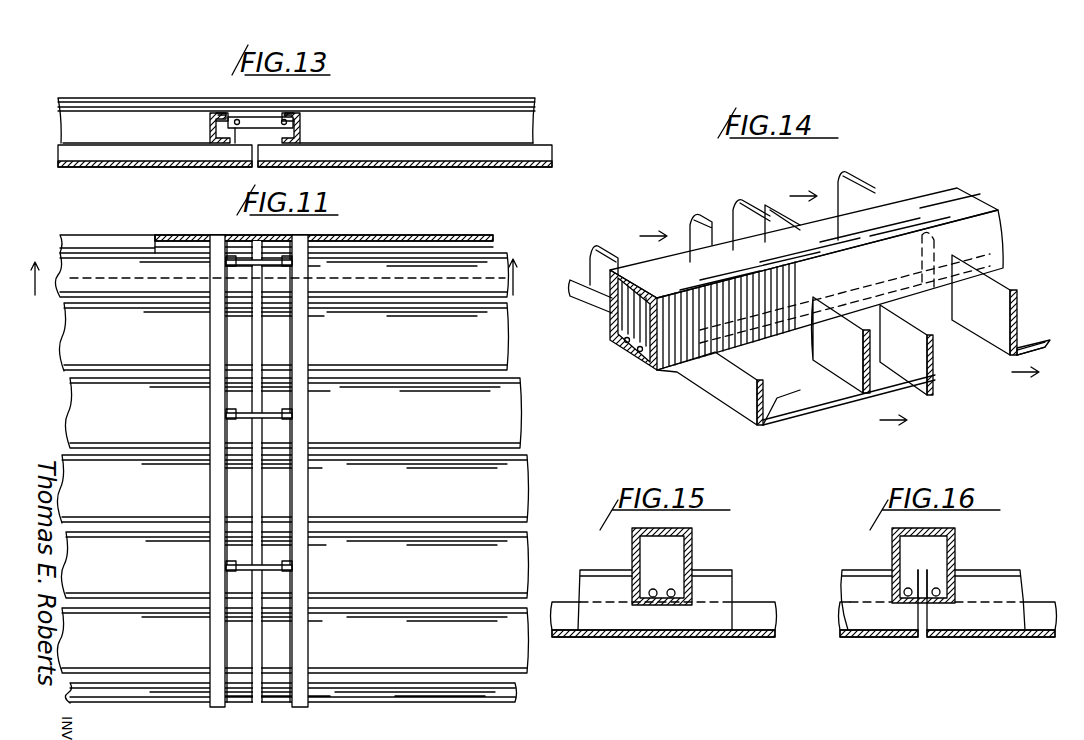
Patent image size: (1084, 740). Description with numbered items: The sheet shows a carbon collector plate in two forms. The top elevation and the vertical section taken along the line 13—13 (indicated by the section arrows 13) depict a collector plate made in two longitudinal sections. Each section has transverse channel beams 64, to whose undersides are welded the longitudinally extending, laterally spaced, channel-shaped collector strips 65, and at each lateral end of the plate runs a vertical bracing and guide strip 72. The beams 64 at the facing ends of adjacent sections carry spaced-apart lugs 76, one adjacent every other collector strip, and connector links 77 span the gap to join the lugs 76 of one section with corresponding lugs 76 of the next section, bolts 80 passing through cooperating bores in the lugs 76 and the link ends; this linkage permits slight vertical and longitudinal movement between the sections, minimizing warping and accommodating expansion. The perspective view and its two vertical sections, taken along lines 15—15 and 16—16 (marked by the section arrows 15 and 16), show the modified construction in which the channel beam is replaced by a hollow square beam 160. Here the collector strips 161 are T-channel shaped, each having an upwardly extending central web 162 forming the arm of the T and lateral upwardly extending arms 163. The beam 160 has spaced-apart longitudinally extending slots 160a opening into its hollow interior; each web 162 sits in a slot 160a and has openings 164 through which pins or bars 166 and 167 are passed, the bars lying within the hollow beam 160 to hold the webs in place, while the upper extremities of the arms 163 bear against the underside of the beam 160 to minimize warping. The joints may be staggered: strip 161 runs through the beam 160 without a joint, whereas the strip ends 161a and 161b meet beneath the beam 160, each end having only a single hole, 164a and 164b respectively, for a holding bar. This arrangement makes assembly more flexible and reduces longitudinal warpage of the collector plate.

In FIG. 11, the section line 13— 13 is at (275, 268).
In FIG. 14, the section line 15— 15 is at (766, 315).
In FIG. 14, the section line 16— 16 is at (908, 273).
In FIG. 13, the channel beam 64 is at (210, 128).
In FIG. 11, the channel beam 64 is at (212, 333).
In FIG. 13, the collector strip 65 is at (119, 162).
In FIG. 11, the collector strip 65 is at (70, 292).
In FIG. 13, the bracing and guide strip 72 is at (120, 107).
In FIG. 11, the bracing and guide strip 72 is at (97, 245).
In FIG. 13, the lug 76 is at (219, 113).
In FIG. 11, the lug 76 is at (226, 259).
In FIG. 13, the connector link 77 is at (262, 118).
In FIG. 11, the connector link 77 is at (296, 268).
In FIG. 13, the bolt 80 is at (280, 128).
In FIG. 11, the bolt 80 is at (282, 422).
In FIG. 14, the hollow square beam 160 is at (610, 302).
In FIG. 14, the slot 160a is at (841, 345).
In FIG. 14, the collector strip 161 is at (712, 392).
In FIG. 15, the collector strip 161 is at (583, 640).
In FIG. 14, the collector strip end 161a is at (985, 362).
In FIG. 16, the collector strip end 161a is at (1020, 640).
In FIG. 14, the collector strip end 161b is at (840, 190).
In FIG. 16, the collector strip end 161b is at (837, 640).
In FIG. 14, the central web 162 is at (905, 372).
In FIG. 15, the central web 162 is at (590, 576).
In FIG. 14, the lateral arm 163 is at (768, 405).
In FIG. 15, the lateral arm 163 is at (745, 612).
In FIG. 14, the opening 164 is at (782, 290).
In FIG. 15, the opening 164 is at (671, 588).
In FIG. 14, the hole 164a is at (982, 305).
In FIG. 16, the hole 164a is at (940, 582).
In FIG. 14, the hole 164b is at (901, 261).
In FIG. 16, the hole 164b is at (906, 586).
In FIG. 14, the pin or bar 166 is at (626, 343).
In FIG. 15, the pin or bar 166 is at (651, 600).
In FIG. 16, the pin or bar 166 is at (905, 600).
In FIG. 14, the pin or bar 167 is at (641, 353).
In FIG. 15, the pin or bar 167 is at (672, 602).
In FIG. 16, the pin or bar 167 is at (938, 602).